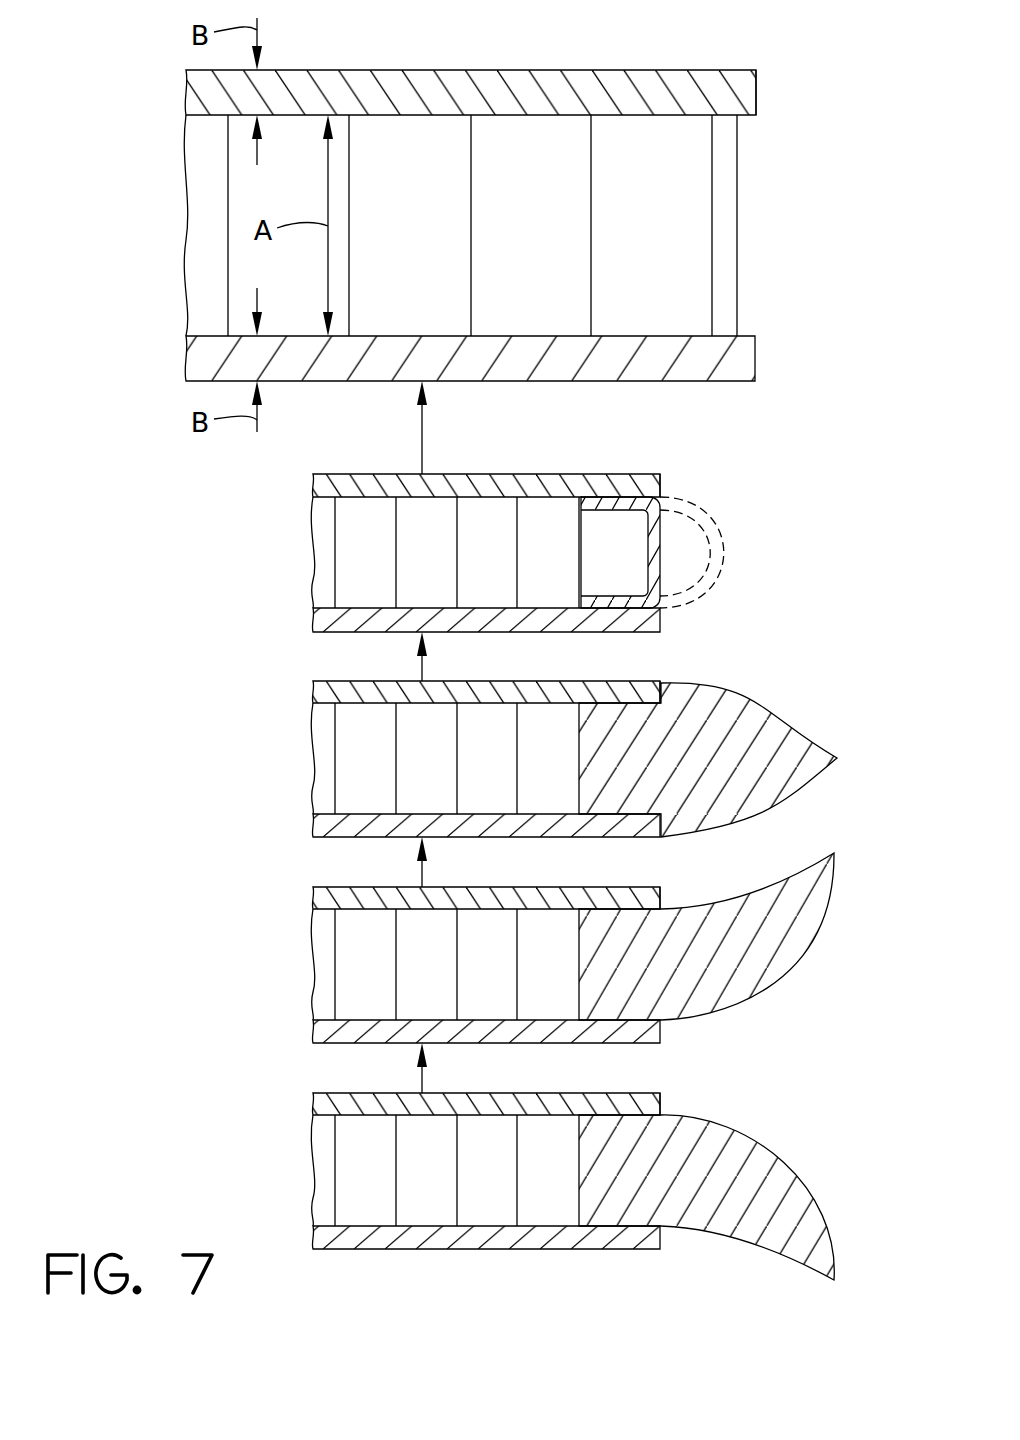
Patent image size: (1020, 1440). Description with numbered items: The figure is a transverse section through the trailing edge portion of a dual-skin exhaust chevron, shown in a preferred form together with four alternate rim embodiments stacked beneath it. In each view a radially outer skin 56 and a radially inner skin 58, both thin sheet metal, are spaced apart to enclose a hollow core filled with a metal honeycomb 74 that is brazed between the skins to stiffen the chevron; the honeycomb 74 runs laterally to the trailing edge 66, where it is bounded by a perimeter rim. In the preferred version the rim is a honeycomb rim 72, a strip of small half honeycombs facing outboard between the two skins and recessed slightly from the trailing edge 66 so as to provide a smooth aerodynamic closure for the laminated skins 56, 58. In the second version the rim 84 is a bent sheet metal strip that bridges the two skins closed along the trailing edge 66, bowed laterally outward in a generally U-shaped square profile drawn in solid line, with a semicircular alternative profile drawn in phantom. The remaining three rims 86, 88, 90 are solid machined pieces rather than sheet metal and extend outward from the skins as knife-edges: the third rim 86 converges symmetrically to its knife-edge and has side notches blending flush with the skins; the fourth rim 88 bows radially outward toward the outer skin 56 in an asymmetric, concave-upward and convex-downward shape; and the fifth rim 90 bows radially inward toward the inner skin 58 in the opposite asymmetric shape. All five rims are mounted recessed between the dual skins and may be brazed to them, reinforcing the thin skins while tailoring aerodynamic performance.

The radially outer skin 56 is at (640, 70).
The radially inner skin 58 is at (640, 381).
The trailing edge 66 is at (757, 90).
The honeycomb rim 72 is at (738, 220).
The honeycomb 74 is at (513, 230).
The perimeter rim 84 is at (662, 548).
The third rim 86 is at (805, 737).
The fourth rim 88 is at (803, 942).
The fifth rim 90 is at (805, 1190).